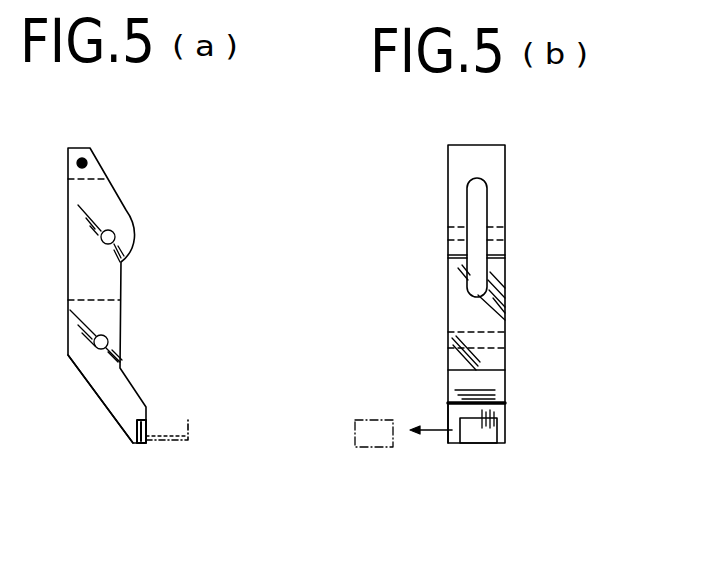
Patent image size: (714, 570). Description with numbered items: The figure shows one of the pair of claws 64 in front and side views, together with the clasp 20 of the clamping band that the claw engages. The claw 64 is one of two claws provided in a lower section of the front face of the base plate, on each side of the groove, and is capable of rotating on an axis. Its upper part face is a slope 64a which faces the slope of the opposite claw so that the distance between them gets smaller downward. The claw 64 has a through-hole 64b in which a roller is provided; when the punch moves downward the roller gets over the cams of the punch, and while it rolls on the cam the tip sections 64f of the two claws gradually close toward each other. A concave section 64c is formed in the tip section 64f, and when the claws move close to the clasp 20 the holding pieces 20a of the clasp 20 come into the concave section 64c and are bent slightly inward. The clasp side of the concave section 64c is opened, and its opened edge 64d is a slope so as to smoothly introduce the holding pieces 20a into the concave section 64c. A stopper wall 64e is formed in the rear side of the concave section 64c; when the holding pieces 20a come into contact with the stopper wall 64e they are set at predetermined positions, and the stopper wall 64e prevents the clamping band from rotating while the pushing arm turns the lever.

In FIG. 5A, the claw 64 is at (121, 311).
In FIG. 5B, the claw 64 is at (505, 312).
In FIG. 5A, the slope 64a is at (100, 170).
In FIG. 5B, the slope 64a is at (488, 168).
In FIG. 5A, the through-hole 64b is at (108, 192).
In FIG. 5B, the through-hole 64b is at (482, 200).
In FIG. 5A, the concave section 64c is at (147, 427).
In FIG. 5B, the concave section 64c is at (477, 438).
In FIG. 5B, the opened edge 64d is at (450, 428).
In FIG. 5B, the stopper wall 64e is at (492, 437).
In FIG. 5A, the tip section 64f is at (125, 413).
In FIG. 5B, the tip section 64f is at (508, 422).
In FIG. 5A, the clasp 20 is at (172, 445).
In FIG. 5B, the clasp 20 is at (353, 422).
In FIG. 5A, the holding piece 20a is at (150, 432).